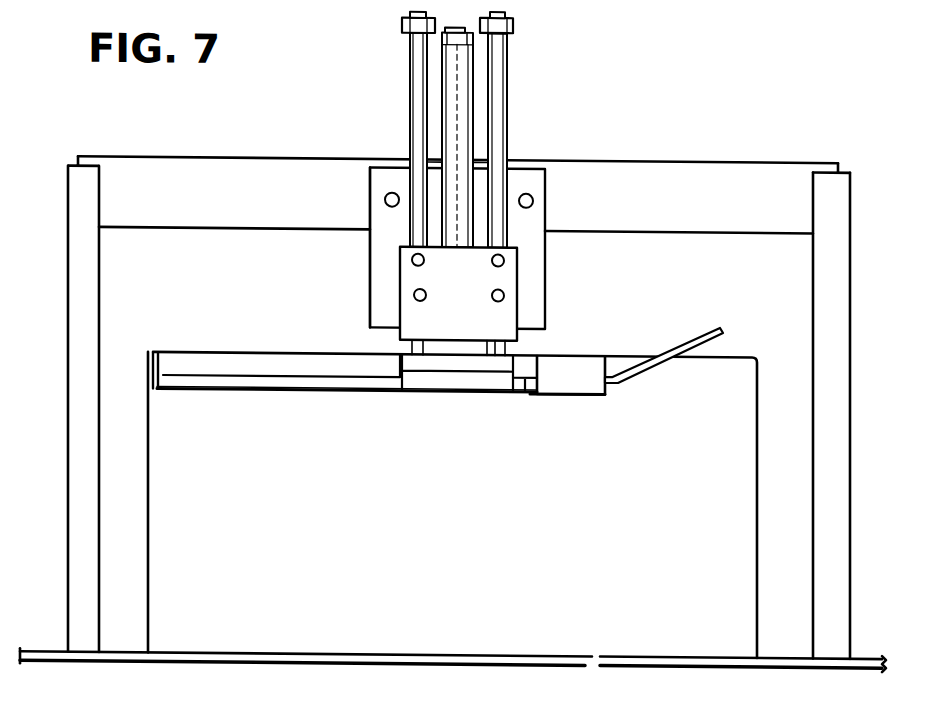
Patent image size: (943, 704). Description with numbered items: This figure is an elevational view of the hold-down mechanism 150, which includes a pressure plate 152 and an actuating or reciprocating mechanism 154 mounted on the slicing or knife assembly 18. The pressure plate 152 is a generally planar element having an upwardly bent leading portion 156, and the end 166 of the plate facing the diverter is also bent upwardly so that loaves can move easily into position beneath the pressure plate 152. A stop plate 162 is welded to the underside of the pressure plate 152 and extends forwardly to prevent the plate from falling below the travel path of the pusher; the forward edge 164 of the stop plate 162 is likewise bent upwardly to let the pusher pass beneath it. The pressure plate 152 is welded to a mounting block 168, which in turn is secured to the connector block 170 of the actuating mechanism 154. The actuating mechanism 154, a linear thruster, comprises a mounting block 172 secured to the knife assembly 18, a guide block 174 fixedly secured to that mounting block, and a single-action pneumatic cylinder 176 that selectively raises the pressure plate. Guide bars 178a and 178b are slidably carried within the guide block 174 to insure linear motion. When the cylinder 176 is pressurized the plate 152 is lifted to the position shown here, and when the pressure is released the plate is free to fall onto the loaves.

The slicing assembly 18 is at (255, 154).
The hold-down mechanism 150 is at (637, 326).
The pressure plate 152 is at (300, 385).
The actuating mechanism 154 is at (369, 274).
The leading portion 156 is at (205, 358).
The stop plate 162 is at (363, 387).
The forward edge 164 is at (558, 362).
The end 166 is at (682, 337).
The mounting block 168 is at (460, 376).
The connector block 170 is at (490, 366).
The mounting block 172 is at (533, 255).
The guide block 174 is at (492, 314).
The pneumatic cylinder 176 is at (460, 94).
The guide bar 178a is at (418, 124).
The guide bar 178b is at (498, 130).